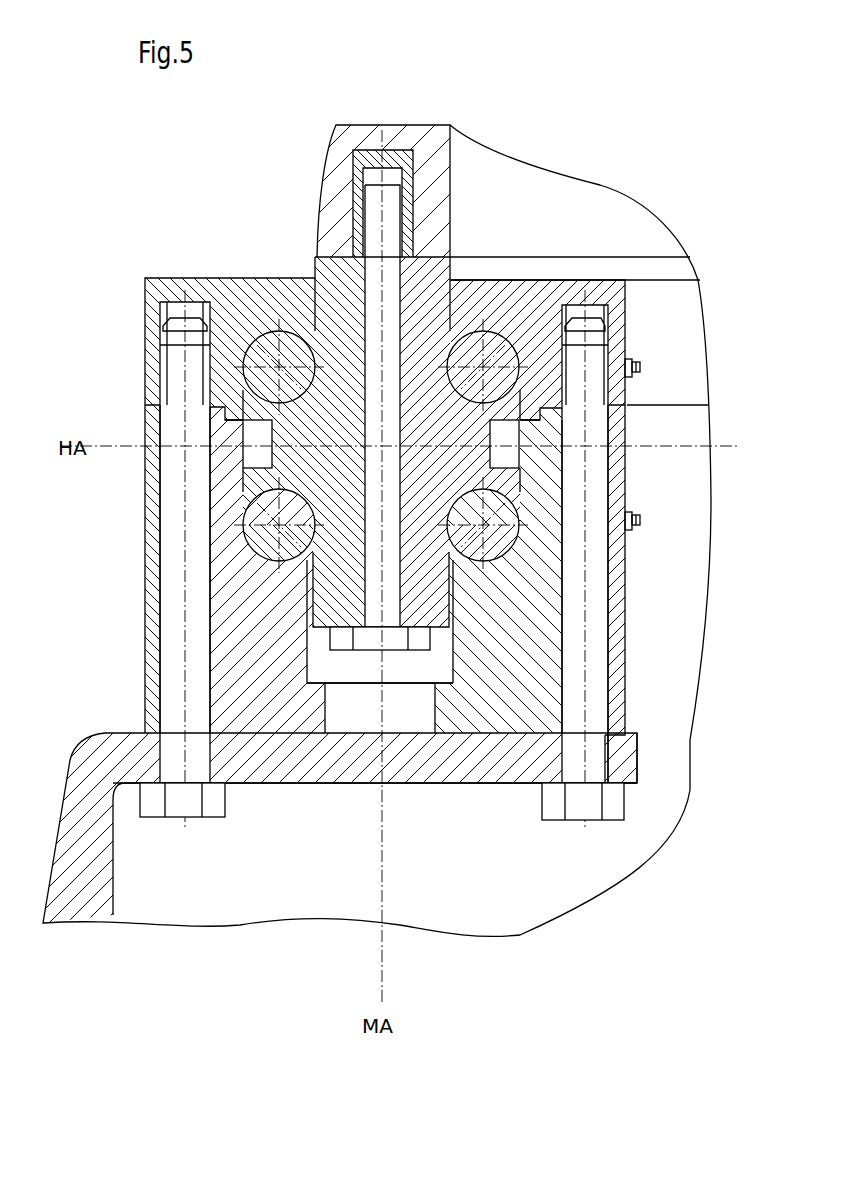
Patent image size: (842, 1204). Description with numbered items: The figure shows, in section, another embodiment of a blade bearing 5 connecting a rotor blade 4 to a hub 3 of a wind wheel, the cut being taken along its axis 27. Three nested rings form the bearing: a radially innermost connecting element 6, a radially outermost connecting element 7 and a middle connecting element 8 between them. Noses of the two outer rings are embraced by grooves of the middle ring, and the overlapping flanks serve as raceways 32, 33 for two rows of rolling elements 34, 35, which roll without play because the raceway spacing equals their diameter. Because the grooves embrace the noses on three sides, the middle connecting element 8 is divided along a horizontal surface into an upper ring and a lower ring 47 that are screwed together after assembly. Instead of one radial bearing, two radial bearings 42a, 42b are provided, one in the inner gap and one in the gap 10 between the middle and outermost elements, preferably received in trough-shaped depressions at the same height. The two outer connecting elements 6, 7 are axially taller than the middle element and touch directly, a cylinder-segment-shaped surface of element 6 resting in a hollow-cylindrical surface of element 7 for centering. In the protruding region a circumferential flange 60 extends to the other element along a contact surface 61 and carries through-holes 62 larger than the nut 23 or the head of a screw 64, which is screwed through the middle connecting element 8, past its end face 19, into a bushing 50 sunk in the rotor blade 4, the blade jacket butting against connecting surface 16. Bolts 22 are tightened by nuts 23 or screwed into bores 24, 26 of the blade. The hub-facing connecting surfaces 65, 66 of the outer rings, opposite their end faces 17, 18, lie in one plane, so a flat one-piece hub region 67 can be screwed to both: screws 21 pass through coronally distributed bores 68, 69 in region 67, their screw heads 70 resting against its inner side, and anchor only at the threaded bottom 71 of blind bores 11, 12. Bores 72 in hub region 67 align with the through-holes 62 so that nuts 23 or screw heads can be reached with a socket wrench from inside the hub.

The hub 3 is at (92, 863).
The rotor blade 4 is at (431, 137).
The blade bearing 5 is at (232, 175).
The radially innermost connecting element 6 is at (618, 488).
The radially outermost connecting element 7 is at (150, 470).
The middle connecting element 8 is at (337, 270).
The gap 10 is at (300, 745).
The bore 11 is at (598, 568).
The bore 12 is at (170, 578).
The connecting surface 16 is at (433, 242).
The end face 17 is at (691, 266).
The end face 18 is at (152, 277).
The end face 19 is at (322, 750).
The screw 21 is at (593, 707).
The bolt 22 is at (374, 188).
The nut 23 is at (345, 640).
The bore 24 is at (603, 664).
The bore 26 is at (386, 172).
The main axis 27 is at (380, 913).
The raceway 32 is at (548, 362).
The raceway 33 is at (522, 387).
The rolling element 34 is at (513, 372).
The rolling element 35 is at (241, 538).
The radial bearing 42a is at (248, 442).
The radial bearing 42b is at (513, 446).
The lower ring 47 is at (540, 718).
The bushing 50 is at (361, 150).
The circumferential flange 60 is at (418, 705).
The contact surface 61 is at (443, 720).
The through-hole 62 is at (396, 710).
The screw 64 is at (388, 288).
The connecting surface 65 is at (498, 722).
The connecting surface 66 is at (247, 735).
The hub region 67 is at (622, 750).
The bore 68 is at (607, 765).
The bore 69 is at (203, 757).
The screw head 70 is at (615, 800).
The bottom of blind hole 71 is at (572, 306).
The bore 72 is at (322, 745).